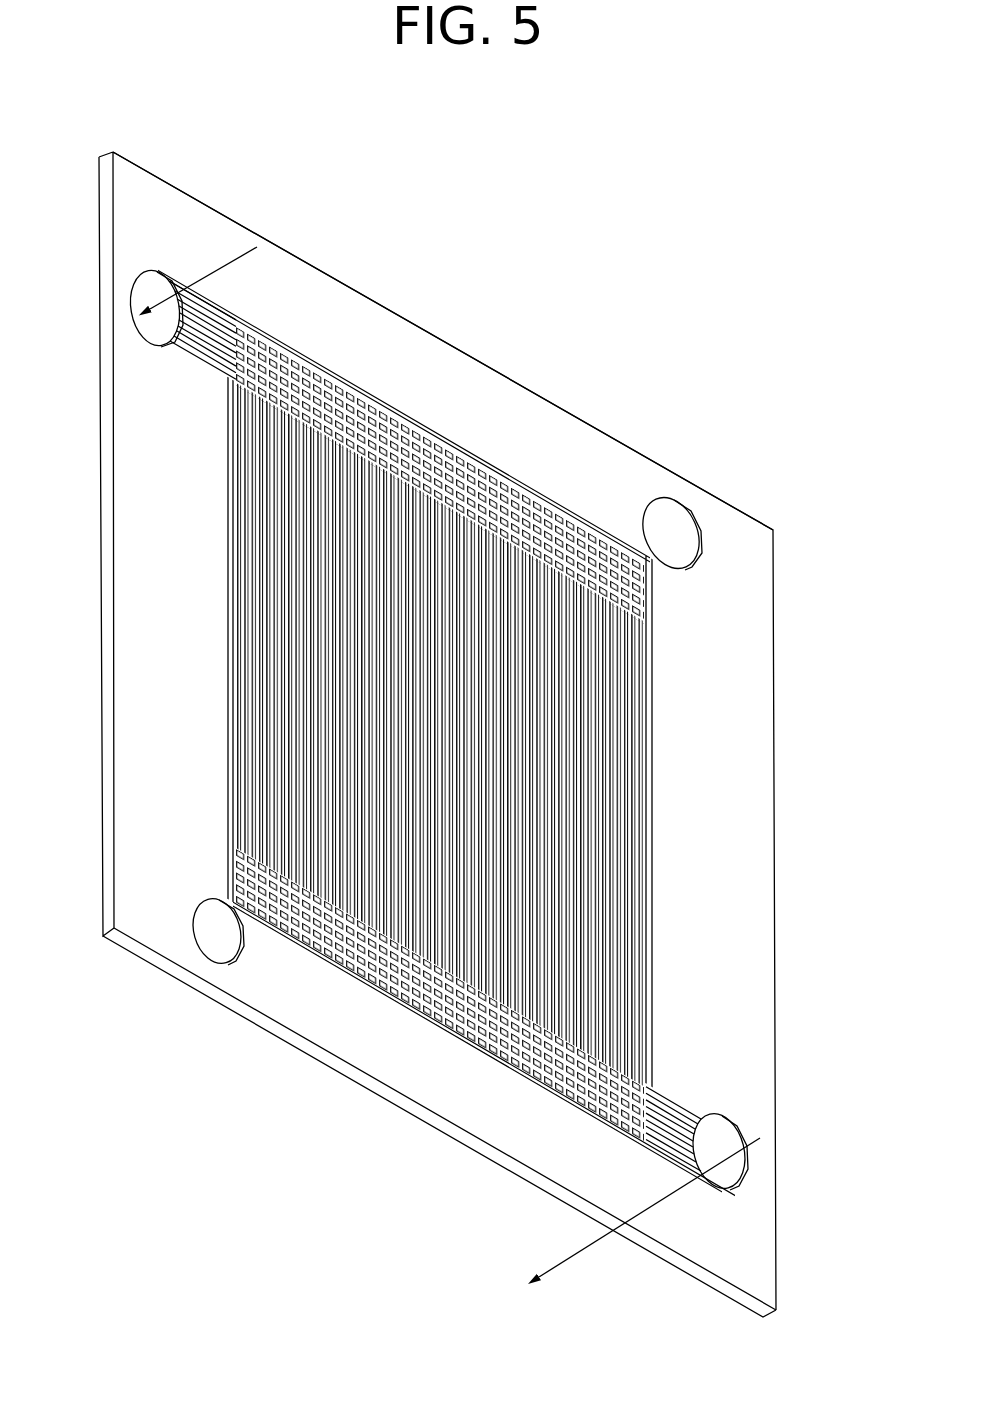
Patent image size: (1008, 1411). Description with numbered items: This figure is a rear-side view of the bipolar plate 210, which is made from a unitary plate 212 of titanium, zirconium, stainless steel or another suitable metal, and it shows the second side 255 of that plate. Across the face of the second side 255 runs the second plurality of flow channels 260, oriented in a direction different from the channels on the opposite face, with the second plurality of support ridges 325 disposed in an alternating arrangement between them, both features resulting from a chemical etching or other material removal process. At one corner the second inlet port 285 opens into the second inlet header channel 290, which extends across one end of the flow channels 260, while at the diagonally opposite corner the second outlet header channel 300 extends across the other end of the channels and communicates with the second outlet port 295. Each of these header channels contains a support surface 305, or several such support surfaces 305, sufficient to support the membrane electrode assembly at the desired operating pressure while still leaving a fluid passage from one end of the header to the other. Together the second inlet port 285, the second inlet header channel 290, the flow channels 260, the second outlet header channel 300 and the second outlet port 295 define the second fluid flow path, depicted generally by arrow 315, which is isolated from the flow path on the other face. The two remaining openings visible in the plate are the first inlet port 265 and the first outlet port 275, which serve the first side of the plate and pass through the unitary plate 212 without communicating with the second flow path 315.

The bipolar plate 210 is at (706, 291).
The unitary plate 212 is at (250, 227).
The second side 255 is at (275, 1003).
The second plurality of flow channels 260 is at (624, 874).
The first inlet port 265 is at (700, 527).
The first outlet port 275 is at (218, 968).
The second inlet port 285 is at (150, 350).
The second inlet header channel 290 is at (420, 436).
The second outlet port 295 is at (736, 1190).
The second outlet header channel 300 is at (406, 1000).
The support surface 305 is at (519, 494).
The second fluid flow path 315 is at (228, 264).
The second plurality of support ridges 325 is at (632, 720).